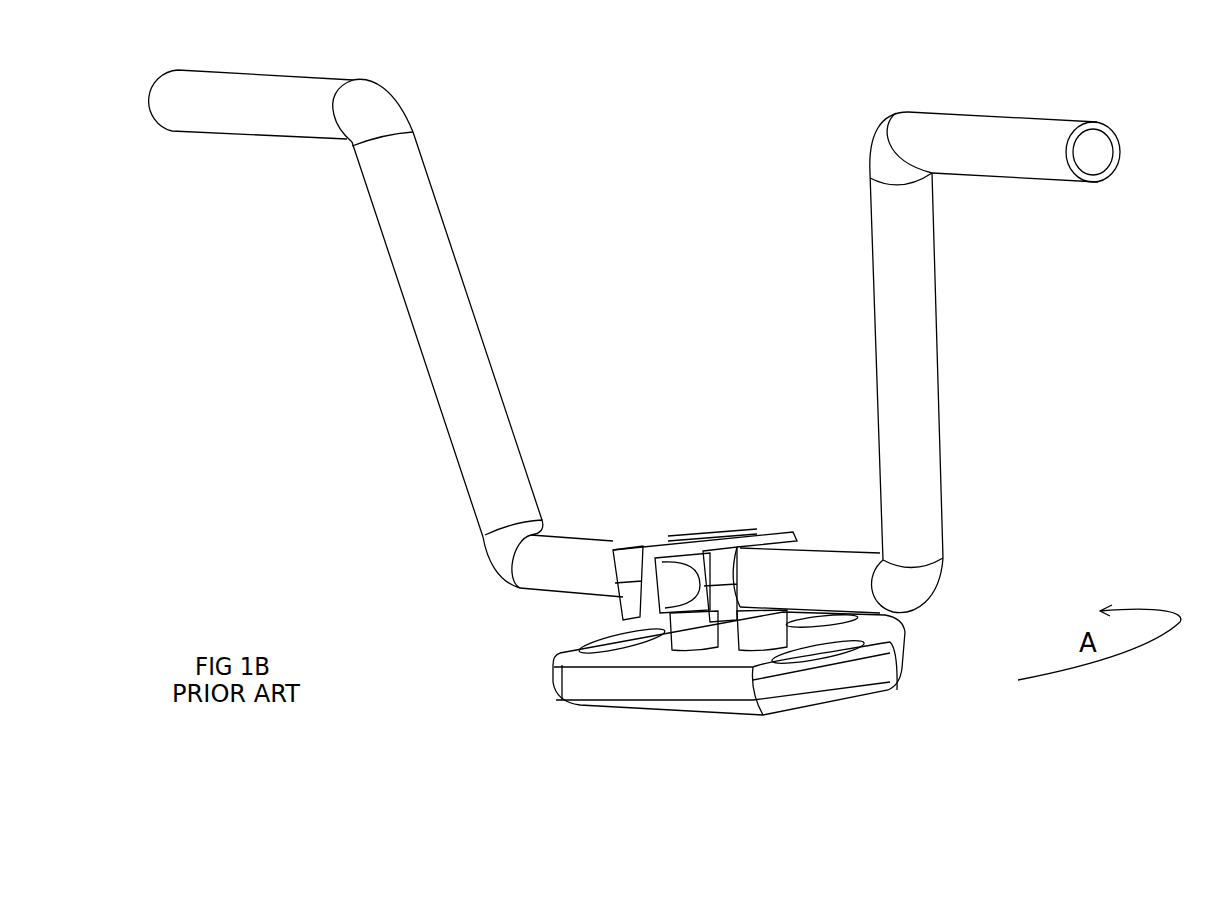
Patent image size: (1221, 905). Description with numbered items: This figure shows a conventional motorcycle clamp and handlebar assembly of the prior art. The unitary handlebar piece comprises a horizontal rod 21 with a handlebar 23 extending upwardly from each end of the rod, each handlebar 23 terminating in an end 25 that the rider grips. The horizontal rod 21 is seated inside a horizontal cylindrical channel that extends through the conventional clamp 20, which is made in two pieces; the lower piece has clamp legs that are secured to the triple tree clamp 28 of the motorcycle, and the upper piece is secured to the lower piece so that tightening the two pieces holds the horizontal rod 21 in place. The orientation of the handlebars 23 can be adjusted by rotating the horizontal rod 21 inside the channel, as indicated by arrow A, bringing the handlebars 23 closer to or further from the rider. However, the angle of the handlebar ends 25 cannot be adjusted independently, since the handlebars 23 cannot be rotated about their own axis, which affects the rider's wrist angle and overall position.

The clamp 20 is at (728, 530).
The horizontal rod 21 is at (582, 558).
The handlebar 23 is at (440, 332).
The handlebar end 25 is at (973, 140).
The triple tree clamp 28 is at (700, 693).